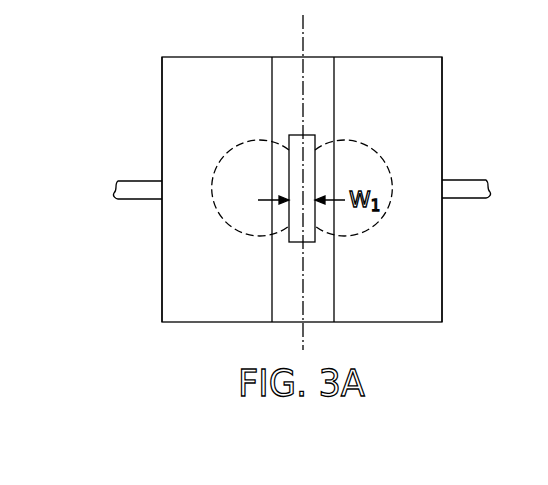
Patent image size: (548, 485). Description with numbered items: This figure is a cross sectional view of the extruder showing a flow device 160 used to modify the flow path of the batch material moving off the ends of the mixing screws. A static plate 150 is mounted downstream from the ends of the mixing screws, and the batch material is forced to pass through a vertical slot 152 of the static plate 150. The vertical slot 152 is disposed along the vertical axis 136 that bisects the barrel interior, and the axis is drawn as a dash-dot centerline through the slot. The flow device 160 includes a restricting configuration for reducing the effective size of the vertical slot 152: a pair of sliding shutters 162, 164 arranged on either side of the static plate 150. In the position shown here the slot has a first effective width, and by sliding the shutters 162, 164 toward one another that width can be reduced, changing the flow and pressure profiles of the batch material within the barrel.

The flow device 160 is at (461, 246).
The sliding shutter 162 is at (184, 66).
The sliding shutter 164 is at (434, 119).
The static plate 150 is at (278, 64).
The vertical axis 136 is at (305, 28).
The vertical slot 152 is at (317, 134).